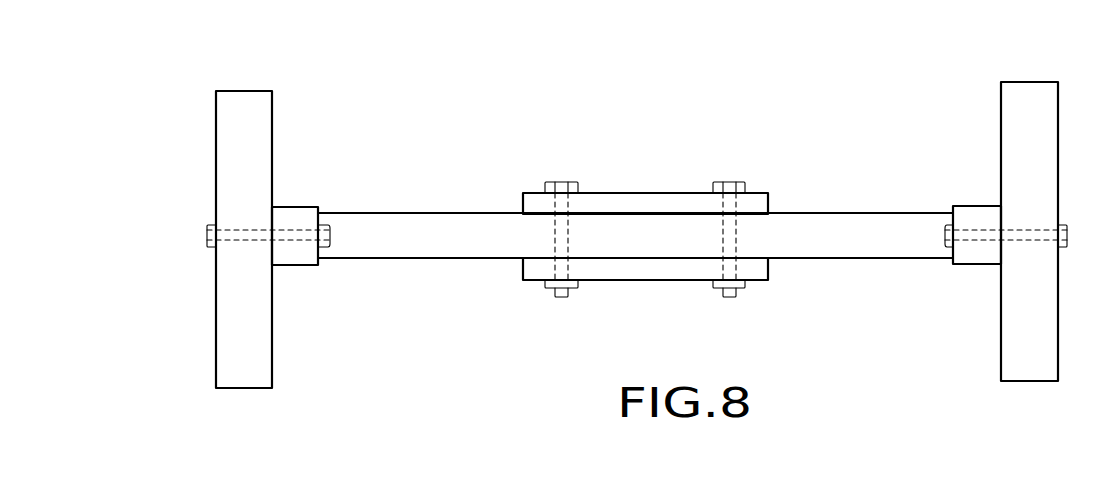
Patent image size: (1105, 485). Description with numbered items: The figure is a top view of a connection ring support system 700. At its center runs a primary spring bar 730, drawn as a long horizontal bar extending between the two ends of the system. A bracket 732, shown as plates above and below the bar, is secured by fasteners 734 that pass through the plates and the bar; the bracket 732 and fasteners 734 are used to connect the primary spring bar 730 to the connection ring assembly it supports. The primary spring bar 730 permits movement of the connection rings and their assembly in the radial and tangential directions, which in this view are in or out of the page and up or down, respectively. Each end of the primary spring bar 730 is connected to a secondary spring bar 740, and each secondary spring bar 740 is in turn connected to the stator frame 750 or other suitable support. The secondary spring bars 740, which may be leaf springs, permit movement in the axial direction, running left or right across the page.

The connection ring support system 700 is at (814, 109).
The primary spring bar 730 is at (845, 212).
The bracket 732 is at (638, 202).
The fasteners 734 is at (728, 188).
The secondary spring bars 740 is at (294, 220).
The stator frame 750 is at (243, 108).